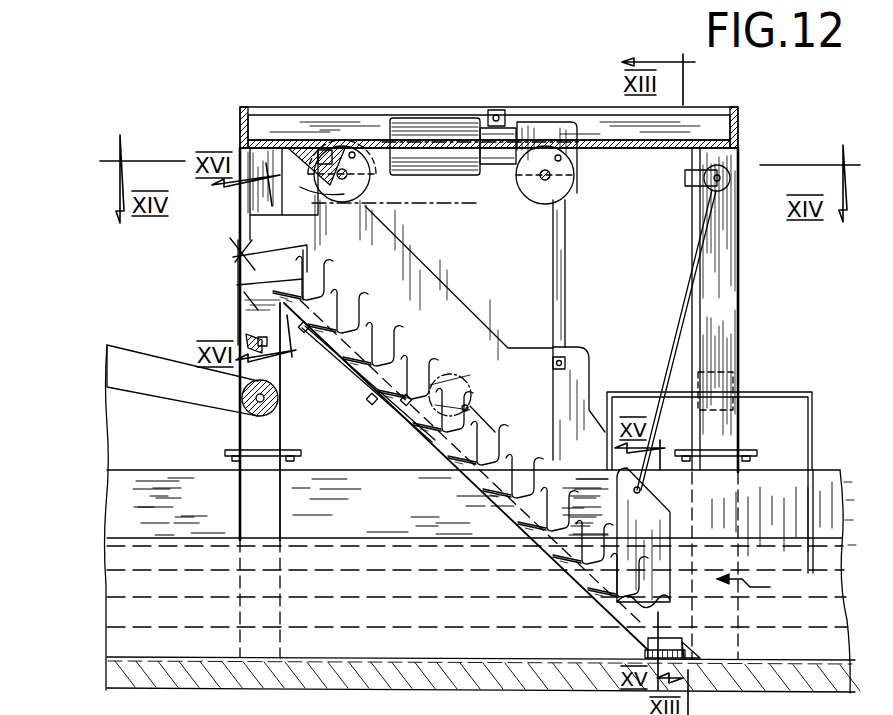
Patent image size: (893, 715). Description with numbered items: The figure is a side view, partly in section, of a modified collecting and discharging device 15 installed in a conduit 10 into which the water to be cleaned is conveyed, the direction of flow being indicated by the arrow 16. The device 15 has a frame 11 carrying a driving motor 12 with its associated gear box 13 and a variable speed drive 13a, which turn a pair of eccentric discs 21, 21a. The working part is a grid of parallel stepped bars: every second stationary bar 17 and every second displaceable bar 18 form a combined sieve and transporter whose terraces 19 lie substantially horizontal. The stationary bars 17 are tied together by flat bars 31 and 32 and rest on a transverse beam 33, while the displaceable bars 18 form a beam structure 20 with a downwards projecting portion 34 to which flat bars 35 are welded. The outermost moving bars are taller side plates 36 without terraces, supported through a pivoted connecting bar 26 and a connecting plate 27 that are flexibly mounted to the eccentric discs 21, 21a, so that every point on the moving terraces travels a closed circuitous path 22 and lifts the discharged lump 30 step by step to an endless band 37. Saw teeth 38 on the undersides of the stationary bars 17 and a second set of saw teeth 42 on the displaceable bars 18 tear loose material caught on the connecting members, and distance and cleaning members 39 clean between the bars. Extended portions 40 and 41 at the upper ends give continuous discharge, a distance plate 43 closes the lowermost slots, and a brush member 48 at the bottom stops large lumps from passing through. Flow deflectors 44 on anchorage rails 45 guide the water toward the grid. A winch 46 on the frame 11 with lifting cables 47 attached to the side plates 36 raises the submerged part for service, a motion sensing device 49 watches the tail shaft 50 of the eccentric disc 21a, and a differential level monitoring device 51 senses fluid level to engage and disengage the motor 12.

The conduit 10 is at (175, 492).
The frame 11 is at (254, 203).
The driving motor 12 is at (408, 126).
The gear box 13 is at (539, 118).
The variable speed drive 13a is at (496, 109).
The collecting and discharging device 15 is at (610, 358).
The flow of water 16 is at (767, 590).
The stationary bar 17 is at (488, 477).
The displaceable bar 18 is at (512, 502).
The terraces 19 is at (397, 320).
The beam structure 20 is at (328, 430).
The eccentric disc 21 is at (542, 155).
The eccentric disc 21a is at (357, 148).
The closed circuitous path 22 is at (442, 368).
The connecting bar 26 is at (553, 244).
The connecting plate 27 is at (374, 194).
The discharged lump 30 is at (468, 406).
The flat bar 31 is at (247, 336).
The flat bar 32 is at (645, 653).
The transverse beam 33 is at (228, 339).
The downwards projecting portion 34 is at (354, 368).
The flat bar 35 is at (264, 344).
The side plate 36 is at (426, 286).
The endless band 37 is at (183, 366).
The saw teeth 38 is at (372, 396).
The distance and cleaning members 39 is at (462, 470).
The extended portion 40 is at (229, 293).
The extended portion 41 is at (238, 252).
The second set of saw teeth 42 is at (226, 262).
The distance plate 43 is at (593, 624).
The flow deflector 44 is at (778, 505).
The anchorage rail 45 is at (812, 408).
The winch 46 is at (685, 178).
The lifting cable 47 is at (681, 307).
The brush member 48 is at (700, 653).
The motion sensing device 49 is at (335, 160).
The tail shaft 50 is at (362, 176).
The differential level monitoring device 51 is at (732, 373).